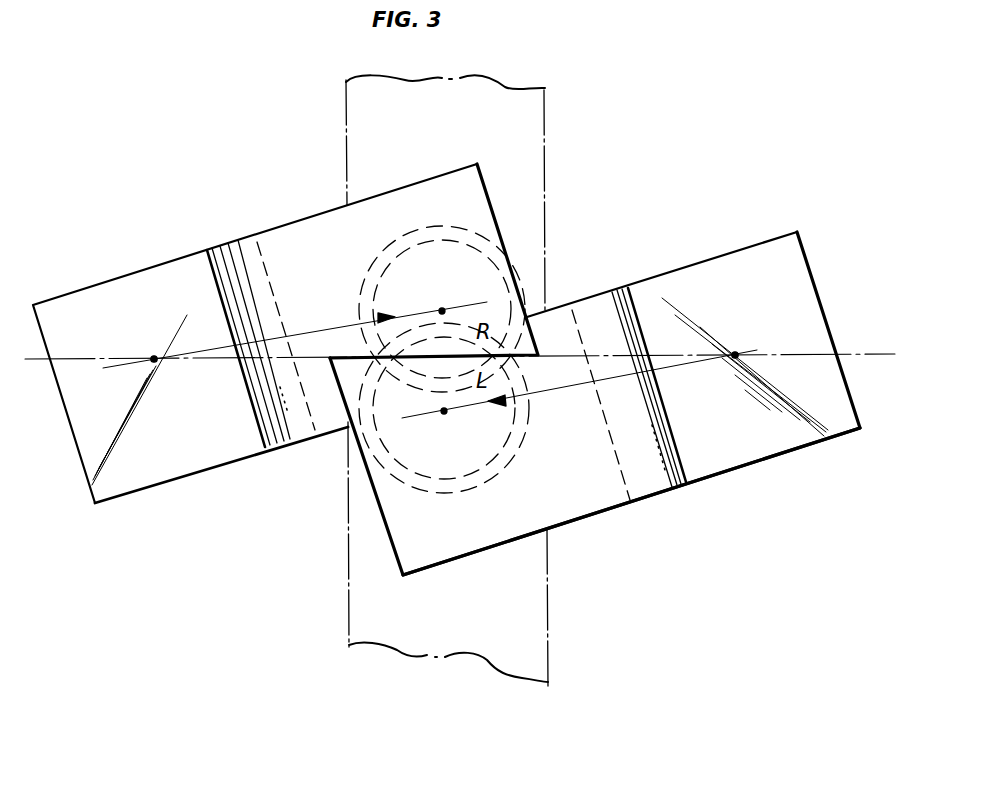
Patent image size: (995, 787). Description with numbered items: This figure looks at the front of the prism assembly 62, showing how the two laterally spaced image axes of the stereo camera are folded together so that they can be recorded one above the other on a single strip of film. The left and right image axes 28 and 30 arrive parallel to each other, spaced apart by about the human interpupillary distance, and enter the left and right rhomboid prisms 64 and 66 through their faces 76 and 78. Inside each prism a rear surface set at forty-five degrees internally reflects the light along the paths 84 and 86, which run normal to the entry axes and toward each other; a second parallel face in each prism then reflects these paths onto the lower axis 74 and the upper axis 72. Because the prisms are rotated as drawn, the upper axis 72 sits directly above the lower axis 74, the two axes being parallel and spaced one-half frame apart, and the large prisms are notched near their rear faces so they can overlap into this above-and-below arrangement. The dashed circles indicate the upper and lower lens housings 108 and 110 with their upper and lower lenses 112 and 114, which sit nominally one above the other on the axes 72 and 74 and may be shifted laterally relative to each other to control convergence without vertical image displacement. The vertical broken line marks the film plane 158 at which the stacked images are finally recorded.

The left image axis 28 is at (735, 355).
The right image axis 30 is at (154, 356).
The prism assembly 62 is at (234, 226).
The left rhomboid prism 64 is at (713, 256).
The right rhomboid prism 66 is at (92, 284).
The upper axis 72 is at (442, 311).
The lower axis 74 is at (444, 411).
The prism face 76 is at (725, 457).
The prism face 78 is at (127, 483).
The image path 84 is at (550, 392).
The image path 86 is at (326, 333).
The upper lens housing 108 is at (500, 222).
The lower lens housing 110 is at (413, 492).
The upper lens 112 is at (487, 283).
The lower lens 114 is at (412, 457).
The film plane 158 is at (547, 237).